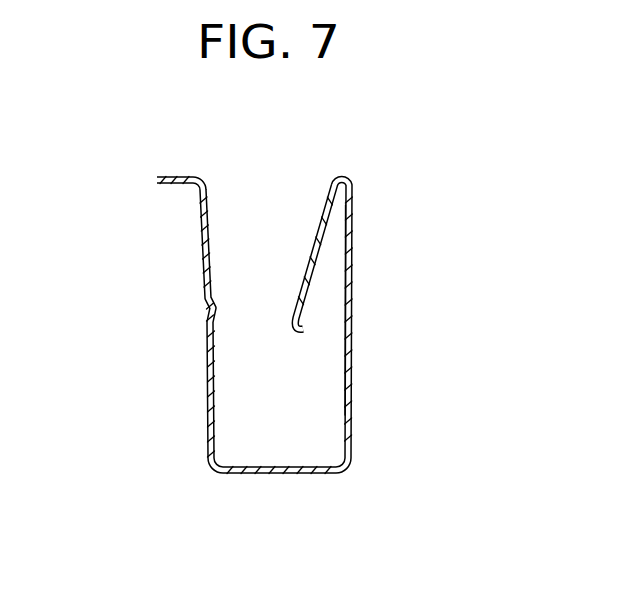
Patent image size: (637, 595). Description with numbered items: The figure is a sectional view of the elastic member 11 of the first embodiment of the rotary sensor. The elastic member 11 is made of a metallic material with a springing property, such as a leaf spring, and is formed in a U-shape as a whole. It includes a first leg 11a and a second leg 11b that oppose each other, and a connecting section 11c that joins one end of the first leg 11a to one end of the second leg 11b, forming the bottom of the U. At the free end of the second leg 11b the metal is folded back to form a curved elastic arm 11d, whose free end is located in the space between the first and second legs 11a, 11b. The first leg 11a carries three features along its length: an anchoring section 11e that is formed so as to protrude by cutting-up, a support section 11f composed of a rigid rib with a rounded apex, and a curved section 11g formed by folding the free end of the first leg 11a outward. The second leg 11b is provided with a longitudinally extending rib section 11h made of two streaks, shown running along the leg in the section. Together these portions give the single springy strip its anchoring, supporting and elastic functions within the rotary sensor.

The elastic member 11 is at (360, 174).
The first leg 11a is at (203, 350).
The second leg 11b is at (355, 418).
The connecting section 11c is at (277, 476).
The curved elastic arm 11d is at (293, 270).
The anchoring section 11e is at (198, 236).
The support section 11f is at (222, 322).
The curved section 11g is at (156, 181).
The rib section 11h is at (357, 321).